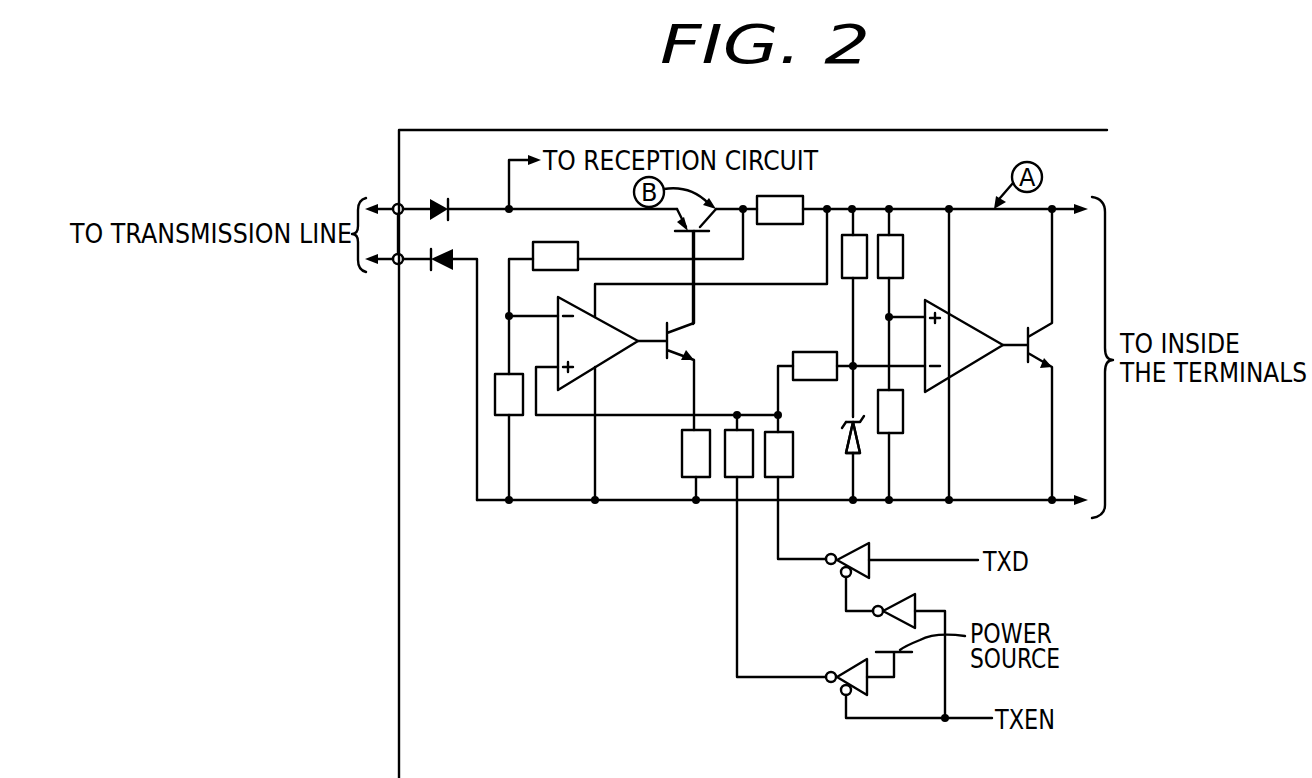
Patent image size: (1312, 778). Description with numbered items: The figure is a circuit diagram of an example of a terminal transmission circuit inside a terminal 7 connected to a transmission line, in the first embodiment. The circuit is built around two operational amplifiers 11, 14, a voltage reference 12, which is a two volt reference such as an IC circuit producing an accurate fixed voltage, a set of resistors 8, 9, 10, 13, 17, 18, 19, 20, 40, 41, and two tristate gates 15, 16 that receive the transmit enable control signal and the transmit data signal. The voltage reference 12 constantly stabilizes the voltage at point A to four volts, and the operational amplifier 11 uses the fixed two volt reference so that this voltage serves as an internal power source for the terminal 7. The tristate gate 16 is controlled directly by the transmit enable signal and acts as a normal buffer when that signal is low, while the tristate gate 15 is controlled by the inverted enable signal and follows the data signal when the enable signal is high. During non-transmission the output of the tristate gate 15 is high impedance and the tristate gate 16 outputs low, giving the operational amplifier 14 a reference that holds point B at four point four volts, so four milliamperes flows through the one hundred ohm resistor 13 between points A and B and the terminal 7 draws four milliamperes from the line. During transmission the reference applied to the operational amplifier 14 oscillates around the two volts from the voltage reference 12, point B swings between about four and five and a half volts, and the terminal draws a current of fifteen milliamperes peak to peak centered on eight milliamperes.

The terminal 7 is at (657, 130).
The resistor 8 is at (513, 415).
The resistor 9 is at (578, 250).
The resistor 10 is at (682, 451).
The operational amplifier 11 is at (958, 319).
The voltage reference 12 is at (845, 424).
The resistor 13 is at (806, 195).
The operational amplifier 14 is at (598, 371).
The tristate gate 15 is at (868, 556).
The tristate gate 16 is at (840, 685).
The resistor 17 is at (842, 276).
The resistor 18 is at (903, 252).
The resistor 19 is at (793, 358).
The resistor 20 is at (903, 421).
The resistor 40 is at (735, 480).
The resistor 41 is at (793, 455).